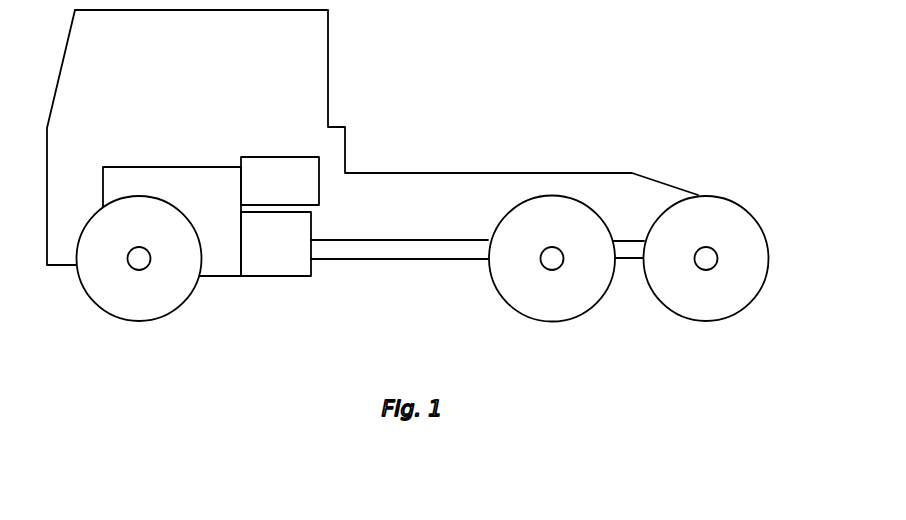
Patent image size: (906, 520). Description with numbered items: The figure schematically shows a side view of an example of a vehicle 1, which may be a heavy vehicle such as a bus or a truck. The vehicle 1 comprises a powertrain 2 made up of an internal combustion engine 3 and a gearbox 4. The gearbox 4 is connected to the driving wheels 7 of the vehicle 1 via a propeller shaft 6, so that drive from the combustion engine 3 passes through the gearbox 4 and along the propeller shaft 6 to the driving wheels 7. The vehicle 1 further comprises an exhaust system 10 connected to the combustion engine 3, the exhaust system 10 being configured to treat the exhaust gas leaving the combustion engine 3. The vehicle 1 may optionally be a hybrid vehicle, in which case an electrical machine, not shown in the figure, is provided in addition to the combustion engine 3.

The vehicle 1 is at (484, 72).
The powertrain 2 is at (345, 288).
The internal combustion engine 3 is at (190, 181).
The gearbox 4 is at (270, 265).
The propeller shaft 6 is at (419, 248).
The driving wheels 7 is at (570, 303).
The exhaust system 10 is at (270, 178).